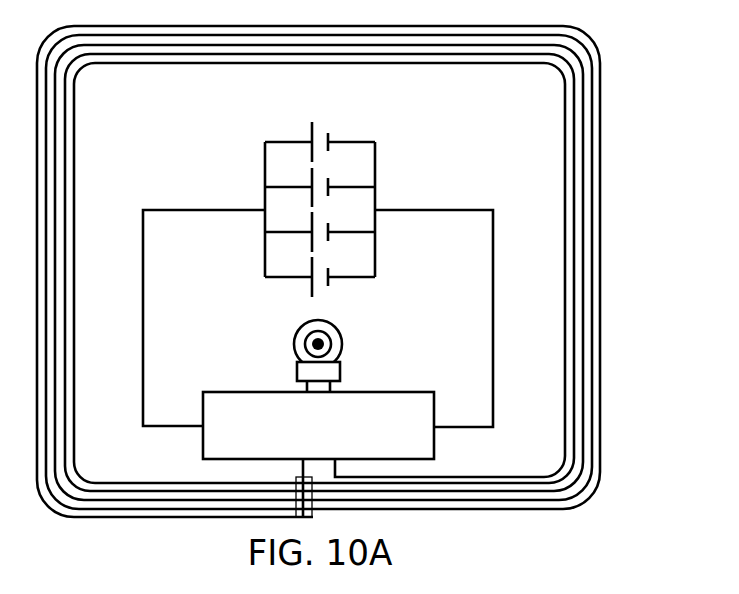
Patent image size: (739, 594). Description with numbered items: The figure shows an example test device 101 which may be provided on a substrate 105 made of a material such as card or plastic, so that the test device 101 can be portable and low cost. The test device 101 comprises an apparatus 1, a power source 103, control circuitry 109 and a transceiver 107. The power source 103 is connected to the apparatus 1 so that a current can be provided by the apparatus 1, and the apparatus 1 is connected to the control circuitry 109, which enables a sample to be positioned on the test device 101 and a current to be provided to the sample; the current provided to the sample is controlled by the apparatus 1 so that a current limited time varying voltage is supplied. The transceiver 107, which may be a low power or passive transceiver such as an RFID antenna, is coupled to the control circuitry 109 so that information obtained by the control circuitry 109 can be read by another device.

The apparatus 1 is at (353, 338).
The test device 101 is at (543, 262).
The power source 103 is at (395, 155).
The substrate 105 is at (543, 113).
The transceiver 107 is at (92, 133).
The control circuitry 109 is at (435, 437).